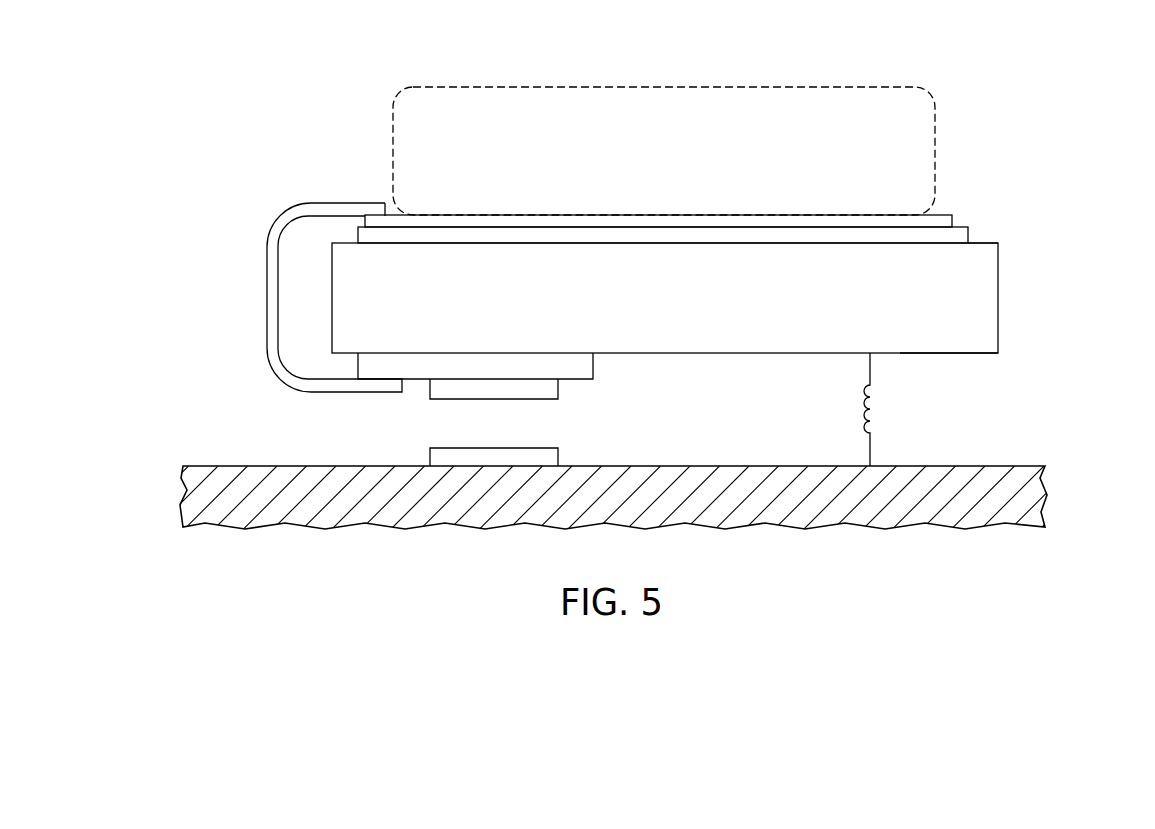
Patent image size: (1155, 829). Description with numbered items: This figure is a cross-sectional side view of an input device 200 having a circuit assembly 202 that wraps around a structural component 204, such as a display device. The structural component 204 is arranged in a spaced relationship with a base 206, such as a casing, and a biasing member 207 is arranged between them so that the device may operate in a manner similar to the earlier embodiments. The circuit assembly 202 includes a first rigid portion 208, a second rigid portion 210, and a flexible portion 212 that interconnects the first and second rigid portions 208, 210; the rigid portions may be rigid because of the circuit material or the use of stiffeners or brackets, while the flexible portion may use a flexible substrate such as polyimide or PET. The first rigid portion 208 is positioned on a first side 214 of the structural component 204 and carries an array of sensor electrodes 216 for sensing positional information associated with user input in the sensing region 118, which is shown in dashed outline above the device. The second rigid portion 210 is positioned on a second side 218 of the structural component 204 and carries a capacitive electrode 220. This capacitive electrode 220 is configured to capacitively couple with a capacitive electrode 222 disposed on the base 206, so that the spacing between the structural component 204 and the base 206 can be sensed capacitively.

The sensing region 118 is at (642, 87).
The input device 200 is at (336, 130).
The circuit assembly 202 is at (252, 204).
The structural component 204 is at (998, 298).
The base 206 is at (985, 471).
The biasing member 207 is at (874, 400).
The first rigid portion 208 is at (965, 228).
The second rigid portion 210 is at (593, 358).
The flexible portion 212 is at (266, 300).
The first side 214 is at (983, 243).
The array of sensor electrodes 216 is at (940, 214).
The second side 218 is at (975, 353).
The capacitive electrode 220 is at (558, 387).
The capacitive electrode 222 is at (430, 460).